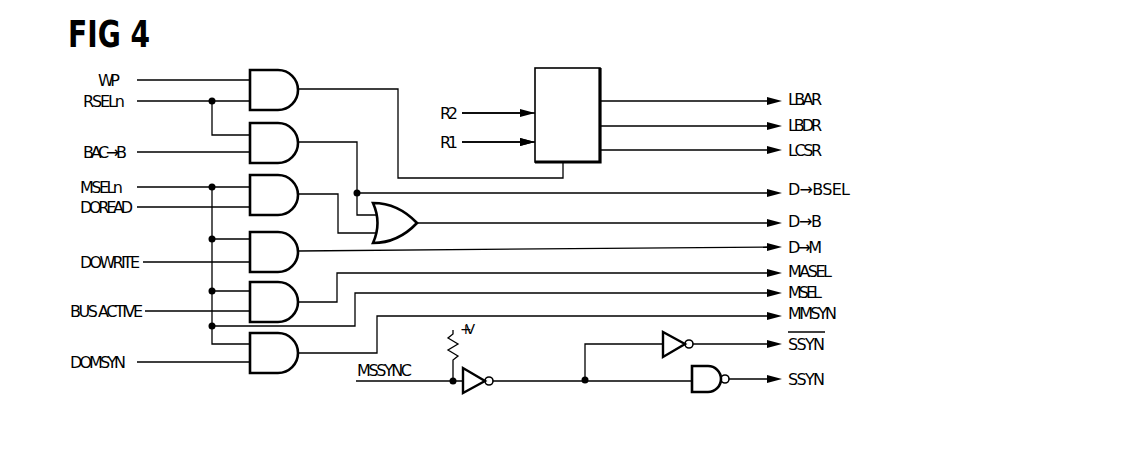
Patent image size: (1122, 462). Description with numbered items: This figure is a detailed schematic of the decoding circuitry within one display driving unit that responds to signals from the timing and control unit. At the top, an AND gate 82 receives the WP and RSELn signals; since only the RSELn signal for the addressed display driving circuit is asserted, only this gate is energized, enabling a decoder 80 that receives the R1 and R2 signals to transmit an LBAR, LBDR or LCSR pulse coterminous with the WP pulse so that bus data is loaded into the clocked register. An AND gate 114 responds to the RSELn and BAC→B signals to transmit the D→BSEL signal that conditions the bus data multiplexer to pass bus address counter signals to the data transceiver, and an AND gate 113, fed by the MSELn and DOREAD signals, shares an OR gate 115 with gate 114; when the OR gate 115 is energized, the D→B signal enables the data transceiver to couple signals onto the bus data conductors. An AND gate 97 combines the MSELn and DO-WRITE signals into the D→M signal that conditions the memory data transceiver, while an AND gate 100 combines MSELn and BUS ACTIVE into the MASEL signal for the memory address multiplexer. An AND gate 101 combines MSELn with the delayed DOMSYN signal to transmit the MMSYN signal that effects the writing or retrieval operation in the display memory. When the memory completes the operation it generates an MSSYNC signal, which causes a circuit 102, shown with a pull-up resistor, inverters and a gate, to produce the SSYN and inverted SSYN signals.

The AND gate 82 is at (406, 124).
The AND gate 114 is at (508, 169).
The AND gate 113 is at (313, 204).
The AND gate 97 is at (508, 252).
The AND gate 100 is at (508, 297).
The AND gate 101 is at (508, 344).
The OR gate 115 is at (570, 223).
The decoder 80 is at (614, 115).
The circuit 102 is at (629, 373).